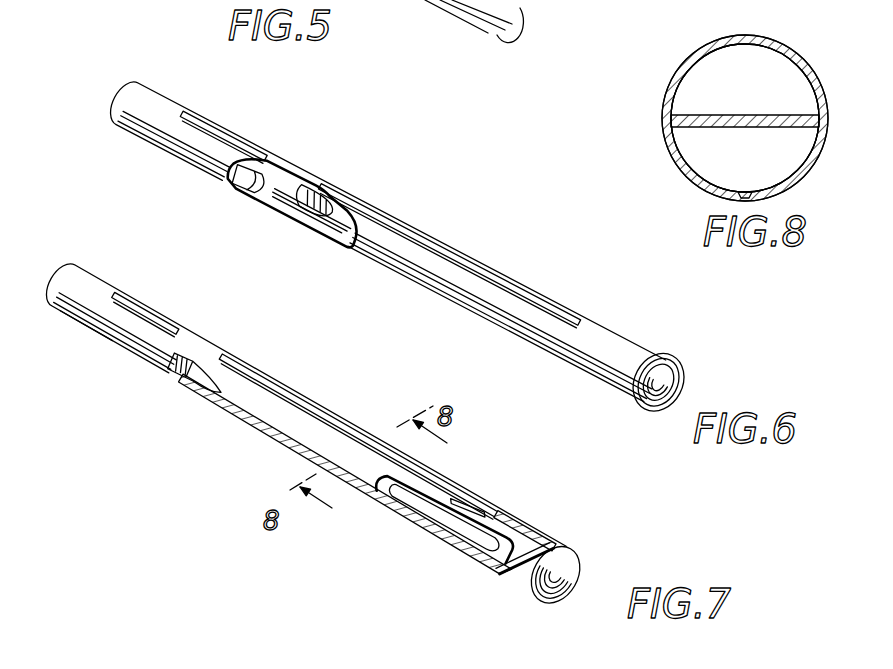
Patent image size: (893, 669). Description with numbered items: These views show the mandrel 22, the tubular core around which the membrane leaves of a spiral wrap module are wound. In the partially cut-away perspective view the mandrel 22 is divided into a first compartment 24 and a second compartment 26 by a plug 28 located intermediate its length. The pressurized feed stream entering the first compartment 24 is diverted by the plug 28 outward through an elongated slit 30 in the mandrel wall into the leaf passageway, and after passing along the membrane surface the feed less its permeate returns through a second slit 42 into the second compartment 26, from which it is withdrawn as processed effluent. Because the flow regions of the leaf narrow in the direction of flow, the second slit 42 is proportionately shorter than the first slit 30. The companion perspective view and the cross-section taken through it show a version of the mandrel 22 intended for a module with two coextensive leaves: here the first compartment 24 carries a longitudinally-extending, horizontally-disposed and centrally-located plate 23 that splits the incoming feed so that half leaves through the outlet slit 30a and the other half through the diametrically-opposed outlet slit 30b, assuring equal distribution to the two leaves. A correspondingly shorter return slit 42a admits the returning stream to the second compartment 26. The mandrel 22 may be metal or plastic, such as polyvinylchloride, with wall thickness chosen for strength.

In FIG. 6, the mandrel 22 is at (631, 345).
In FIG. 7, the mandrel 22 is at (573, 562).
In FIG. 8, the mandrel 22 is at (800, 63).
In FIG. 7, the plate 23 is at (530, 547).
In FIG. 8, the plate 23 is at (788, 92).
In FIG. 6, the first compartment 24 is at (339, 230).
In FIG. 7, the first compartment 24 is at (528, 576).
In FIG. 6, the second compartment 26 is at (252, 182).
In FIG. 7, the second compartment 26 is at (112, 348).
In FIG. 6, the plug 28 is at (281, 207).
In FIG. 7, the plug 28 is at (186, 380).
In FIG. 6, the elongated slit 30 is at (473, 267).
In FIG. 7, the mandrel outlet slit 30a is at (240, 370).
In FIG. 8, the mandrel outlet slit 30a is at (745, 40).
In FIG. 7, the diametrically-opposed outlet slit 30b is at (262, 416).
In FIG. 8, the diametrically-opposed outlet slit 30b is at (745, 193).
In FIG. 6, the second slit 42 is at (245, 142).
In FIG. 7, the slot 42a is at (150, 312).